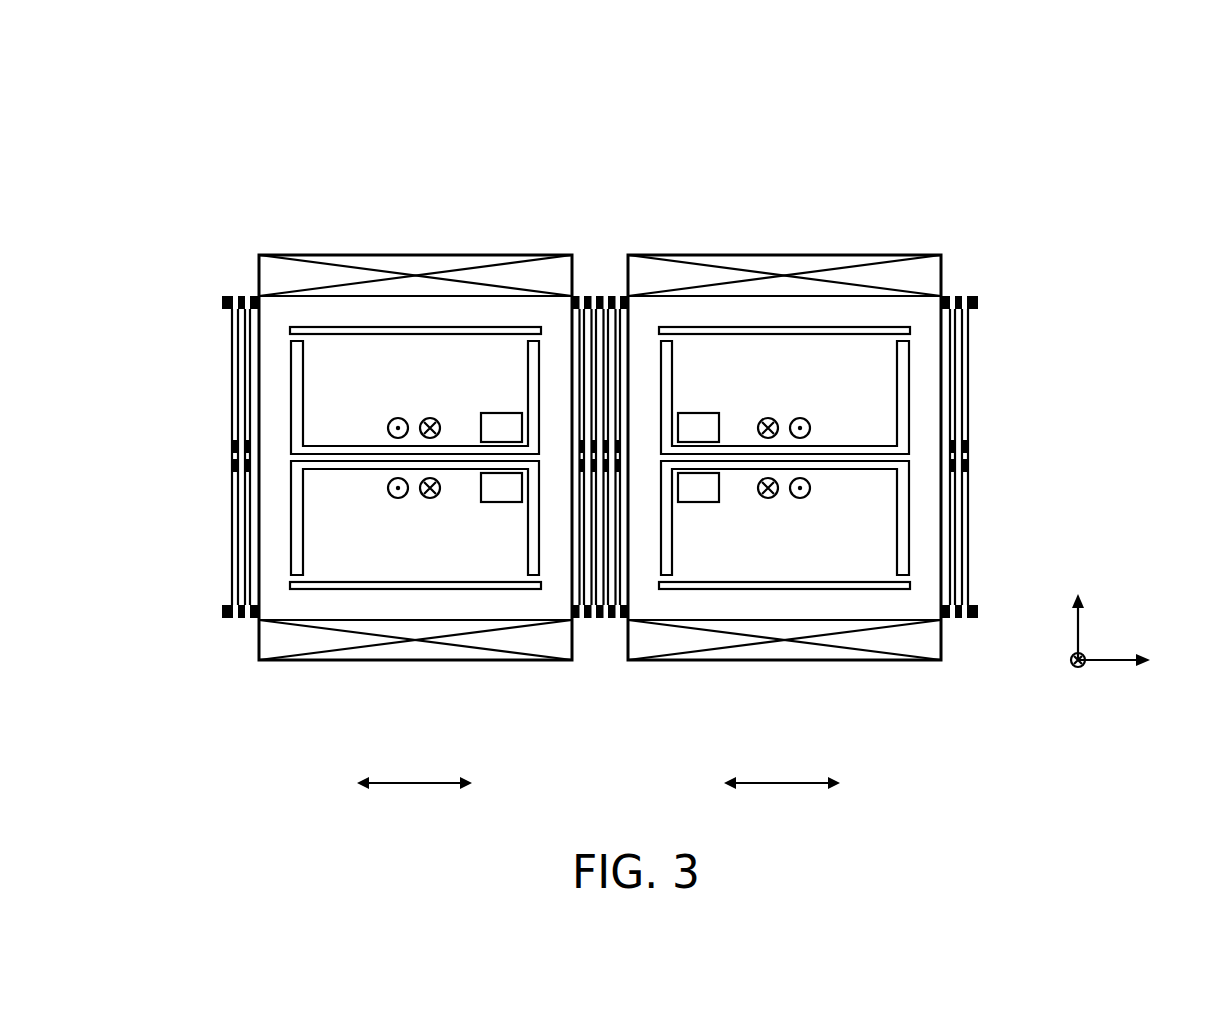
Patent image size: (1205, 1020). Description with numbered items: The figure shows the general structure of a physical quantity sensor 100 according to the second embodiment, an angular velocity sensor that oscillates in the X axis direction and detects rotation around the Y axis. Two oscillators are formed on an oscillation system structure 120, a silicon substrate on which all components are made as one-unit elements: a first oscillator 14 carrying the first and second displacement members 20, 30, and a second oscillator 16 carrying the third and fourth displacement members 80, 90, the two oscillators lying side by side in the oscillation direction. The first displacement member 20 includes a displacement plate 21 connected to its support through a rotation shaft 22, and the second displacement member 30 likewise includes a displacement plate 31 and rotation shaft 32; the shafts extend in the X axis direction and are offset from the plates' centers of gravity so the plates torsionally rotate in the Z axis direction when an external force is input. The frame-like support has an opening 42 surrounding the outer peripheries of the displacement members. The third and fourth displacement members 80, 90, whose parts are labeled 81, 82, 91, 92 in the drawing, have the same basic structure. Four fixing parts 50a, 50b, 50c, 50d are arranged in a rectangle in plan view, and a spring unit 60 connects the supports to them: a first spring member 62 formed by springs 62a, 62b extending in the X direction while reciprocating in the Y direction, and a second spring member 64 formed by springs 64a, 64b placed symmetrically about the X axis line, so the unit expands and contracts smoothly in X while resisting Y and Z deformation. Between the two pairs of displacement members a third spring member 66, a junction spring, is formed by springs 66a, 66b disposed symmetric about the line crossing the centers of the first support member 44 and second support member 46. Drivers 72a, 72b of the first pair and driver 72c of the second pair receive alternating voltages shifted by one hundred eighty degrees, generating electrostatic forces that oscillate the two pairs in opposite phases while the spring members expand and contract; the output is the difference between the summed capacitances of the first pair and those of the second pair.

The physical quantity sensor 100 is at (603, 91).
The first oscillator 14 is at (542, 461).
The second oscillator 16 is at (840, 468).
The first displacement member 20 is at (360, 384).
The displacement plate 21 is at (455, 362).
The rotation shaft 22 is at (301, 326).
The second displacement member 30 is at (421, 547).
The displacement plate 31 is at (341, 566).
The rotation shaft 32 is at (298, 578).
The opening 42 is at (292, 375).
The first support member 44 is at (451, 610).
The second support member 46 is at (930, 347).
The fixing part 50a is at (196, 399).
The fixing part 50b is at (225, 620).
The fixing part 50c is at (972, 296).
The fixing part 50d is at (970, 620).
The spring unit 60 is at (1029, 457).
The first spring member 62 is at (1016, 457).
The spring 62a is at (965, 378).
The spring 62b is at (234, 405).
The second spring member 64 is at (1010, 457).
The spring 64a is at (965, 533).
The spring 64b is at (234, 538).
The third spring member 66 is at (611, 403).
The spring 66a is at (598, 297).
The spring 66b is at (598, 620).
The driver 72a is at (499, 274).
The driver 72b is at (495, 640).
The driver 72c is at (793, 265).
The third displacement member 80 is at (862, 363).
The second detection portion 81 is at (722, 362).
The movable electrode plate 82 is at (668, 326).
The fourth displacement member 90 is at (860, 560).
The drive electrode 91 is at (716, 566).
The drive fixed electrode 92 is at (669, 578).
The oscillation system structure 120 is at (270, 288).